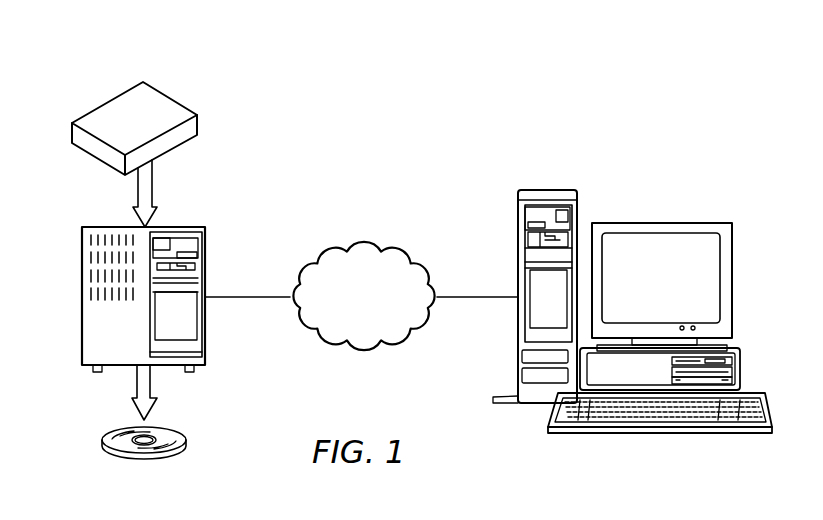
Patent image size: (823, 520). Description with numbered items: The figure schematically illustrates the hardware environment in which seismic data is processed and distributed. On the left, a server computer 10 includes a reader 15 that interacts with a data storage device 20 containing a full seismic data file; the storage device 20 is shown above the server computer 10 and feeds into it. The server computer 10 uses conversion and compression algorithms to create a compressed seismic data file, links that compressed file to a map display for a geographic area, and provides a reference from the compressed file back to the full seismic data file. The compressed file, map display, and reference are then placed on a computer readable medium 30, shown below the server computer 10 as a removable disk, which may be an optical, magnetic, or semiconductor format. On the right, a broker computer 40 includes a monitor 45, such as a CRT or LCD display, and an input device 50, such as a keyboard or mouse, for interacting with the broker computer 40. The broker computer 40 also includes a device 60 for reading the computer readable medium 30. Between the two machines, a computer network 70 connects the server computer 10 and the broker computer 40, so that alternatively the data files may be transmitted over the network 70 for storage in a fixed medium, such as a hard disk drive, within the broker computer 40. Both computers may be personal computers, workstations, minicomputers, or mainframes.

The server computer 10 is at (82, 295).
The reader 15 is at (190, 262).
The data storage device 20 is at (113, 107).
The computer readable medium 30 is at (102, 443).
The broker computer 40 is at (547, 189).
The monitor 45 is at (732, 280).
The input device 50 is at (662, 435).
The device for reading a computer readable medium 60 is at (532, 217).
The computer network 70 is at (335, 248).